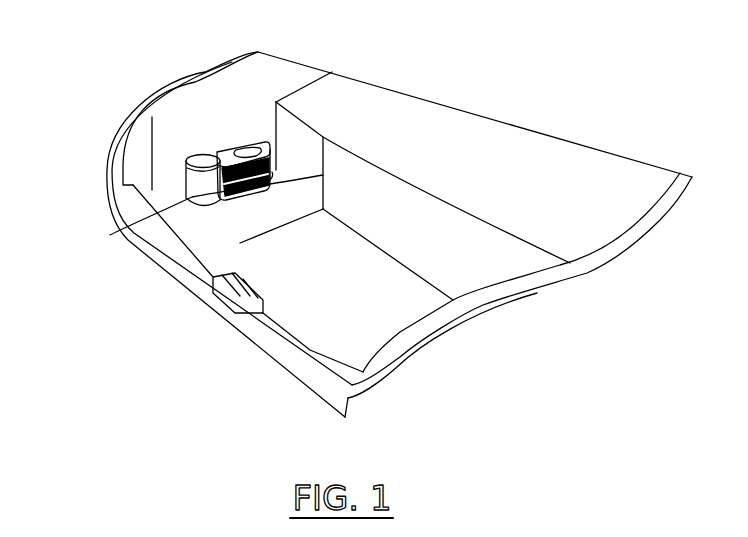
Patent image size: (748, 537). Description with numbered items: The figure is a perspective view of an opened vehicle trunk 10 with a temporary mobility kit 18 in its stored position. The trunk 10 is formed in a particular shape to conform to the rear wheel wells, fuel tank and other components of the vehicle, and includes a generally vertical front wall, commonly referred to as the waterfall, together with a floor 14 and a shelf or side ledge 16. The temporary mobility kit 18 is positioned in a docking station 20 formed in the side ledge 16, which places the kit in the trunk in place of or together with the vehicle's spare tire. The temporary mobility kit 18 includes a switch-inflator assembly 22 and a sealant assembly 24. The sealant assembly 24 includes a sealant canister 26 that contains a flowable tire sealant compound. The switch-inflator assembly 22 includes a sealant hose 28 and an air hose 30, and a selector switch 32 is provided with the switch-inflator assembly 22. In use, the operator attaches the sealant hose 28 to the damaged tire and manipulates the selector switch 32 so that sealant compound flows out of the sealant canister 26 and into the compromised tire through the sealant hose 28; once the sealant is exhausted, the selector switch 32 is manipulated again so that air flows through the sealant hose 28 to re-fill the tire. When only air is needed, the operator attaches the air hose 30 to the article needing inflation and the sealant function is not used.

The vehicle trunk 10 is at (607, 118).
The floor 14 is at (357, 340).
The side ledge 16 is at (110, 235).
The temporary mobility kit 18 is at (158, 160).
The docking station 20 is at (210, 272).
The switch-inflator assembly 22 is at (237, 147).
The sealant assembly 24 is at (202, 158).
The sealant canister 26 is at (175, 222).
The sealant hose 28 is at (274, 177).
The air hose 30 is at (272, 177).
The selector switch 32 is at (257, 140).